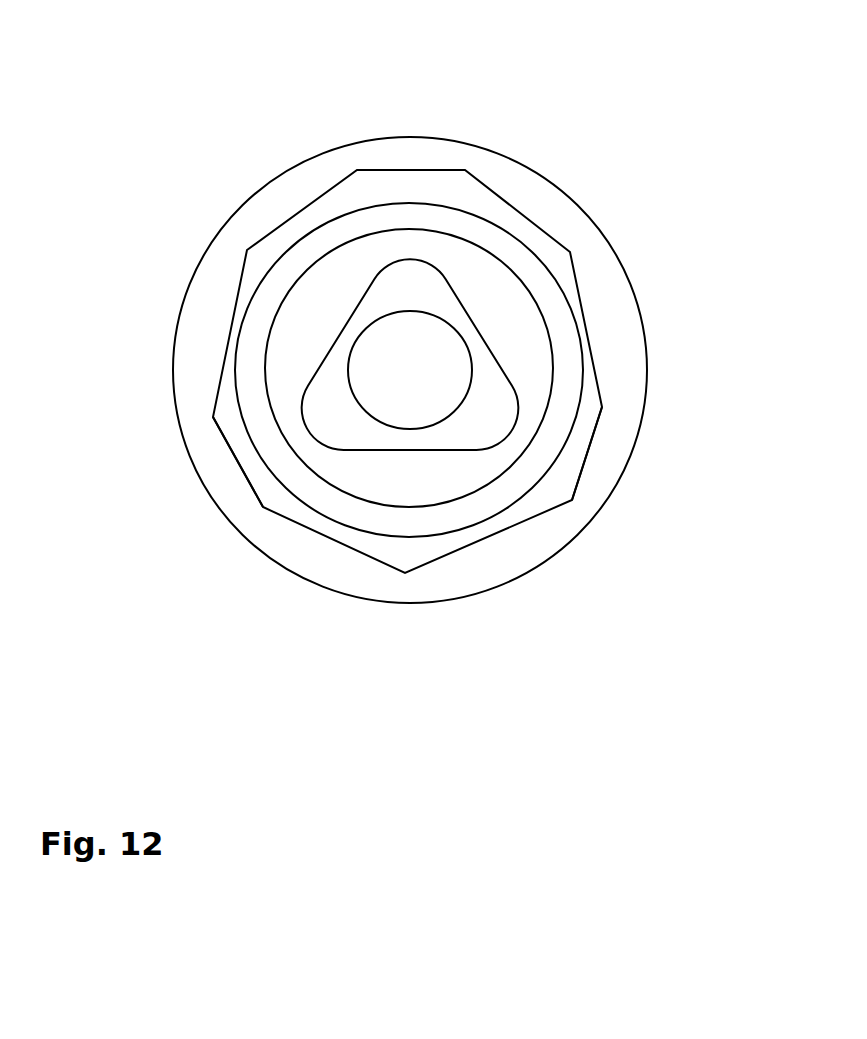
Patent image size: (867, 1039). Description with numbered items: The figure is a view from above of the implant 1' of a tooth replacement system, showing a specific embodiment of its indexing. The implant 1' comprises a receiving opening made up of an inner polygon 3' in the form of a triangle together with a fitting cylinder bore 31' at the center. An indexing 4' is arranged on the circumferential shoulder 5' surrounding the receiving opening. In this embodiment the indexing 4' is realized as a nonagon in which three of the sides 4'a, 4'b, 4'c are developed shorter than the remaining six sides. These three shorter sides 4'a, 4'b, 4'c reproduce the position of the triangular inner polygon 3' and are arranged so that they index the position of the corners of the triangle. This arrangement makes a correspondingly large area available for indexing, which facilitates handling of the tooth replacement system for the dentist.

The implant 1' is at (416, 305).
The inner polygon 3' is at (414, 470).
The fitting cylinder bore 31' is at (357, 253).
The indexing 4' is at (479, 340).
The side of the nonagon 4'a is at (425, 90).
The side of the nonagon 4'b is at (641, 502).
The side of the nonagon 4'c is at (185, 504).
The circumferential shoulder 5' is at (511, 362).